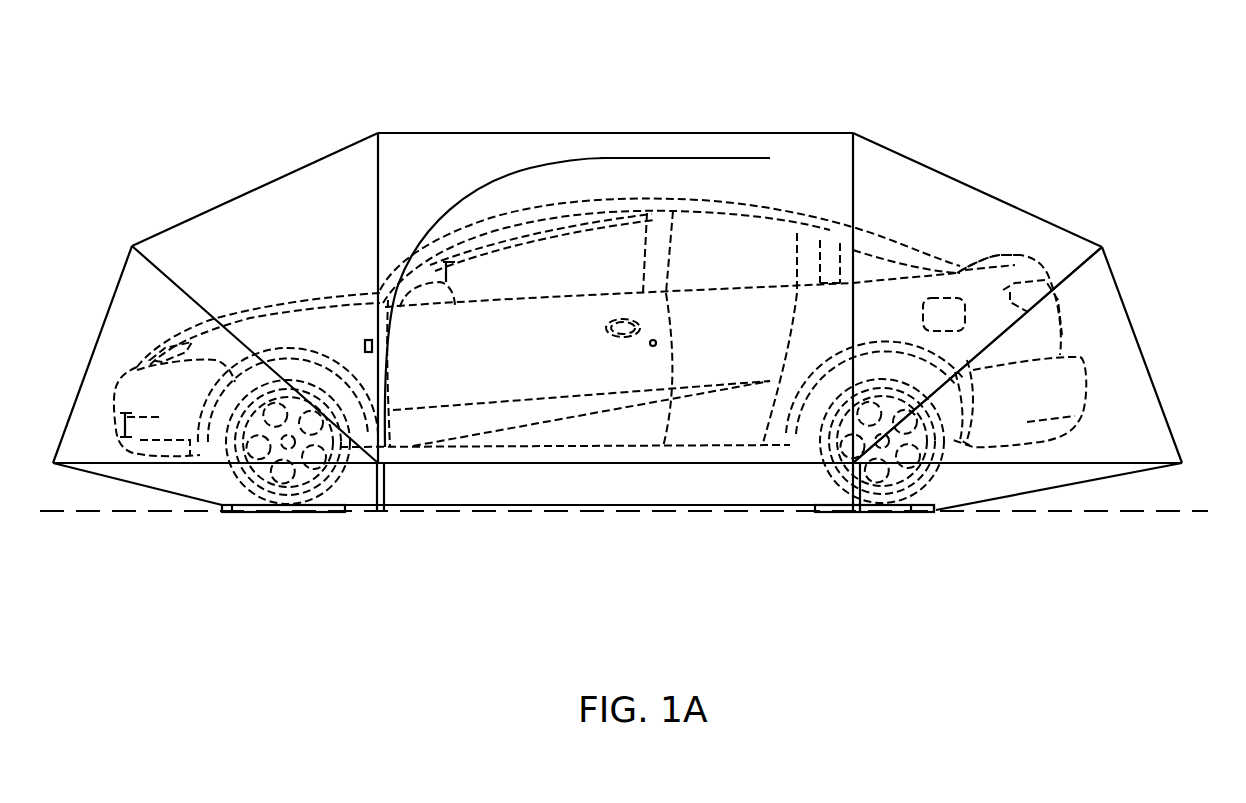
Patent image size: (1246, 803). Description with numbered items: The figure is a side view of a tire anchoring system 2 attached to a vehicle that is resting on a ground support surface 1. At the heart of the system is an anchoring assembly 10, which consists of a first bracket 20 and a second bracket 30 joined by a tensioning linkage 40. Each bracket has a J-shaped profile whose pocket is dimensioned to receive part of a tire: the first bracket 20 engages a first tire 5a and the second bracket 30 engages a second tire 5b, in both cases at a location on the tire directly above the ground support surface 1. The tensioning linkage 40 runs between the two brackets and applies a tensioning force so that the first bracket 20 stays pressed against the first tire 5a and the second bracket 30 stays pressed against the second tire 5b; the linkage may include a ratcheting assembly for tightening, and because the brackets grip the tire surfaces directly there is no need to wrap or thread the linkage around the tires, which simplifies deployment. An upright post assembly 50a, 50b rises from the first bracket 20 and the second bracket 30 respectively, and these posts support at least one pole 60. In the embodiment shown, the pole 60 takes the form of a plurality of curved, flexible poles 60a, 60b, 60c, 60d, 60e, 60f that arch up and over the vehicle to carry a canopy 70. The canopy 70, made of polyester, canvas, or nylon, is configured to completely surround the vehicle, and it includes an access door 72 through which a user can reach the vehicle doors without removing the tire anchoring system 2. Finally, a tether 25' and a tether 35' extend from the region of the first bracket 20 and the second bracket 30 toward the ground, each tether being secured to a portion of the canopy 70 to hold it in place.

The ground support surface 1 is at (1186, 511).
The tire anchoring system 2 is at (750, 95).
The first tire 5a is at (227, 505).
The second tire 5b is at (943, 503).
The anchoring assembly 10 is at (607, 514).
The first bracket 20 is at (317, 514).
The tether 25' is at (137, 526).
The second bracket 30 is at (919, 514).
The tether 35' is at (1059, 527).
The tensioning linkage 40 is at (713, 505).
The upright post assembly 50a is at (387, 483).
The upright post assembly 50b is at (832, 507).
The pole 60 is at (378, 212).
The curved pole 60a is at (90, 462).
The curved pole 60b is at (163, 267).
The curved pole 60c is at (380, 167).
The curved pole 60d is at (853, 167).
The curved pole 60e is at (1103, 268).
The curved pole 60f is at (1133, 460).
The canopy 70 is at (950, 215).
The access door 72 is at (643, 158).